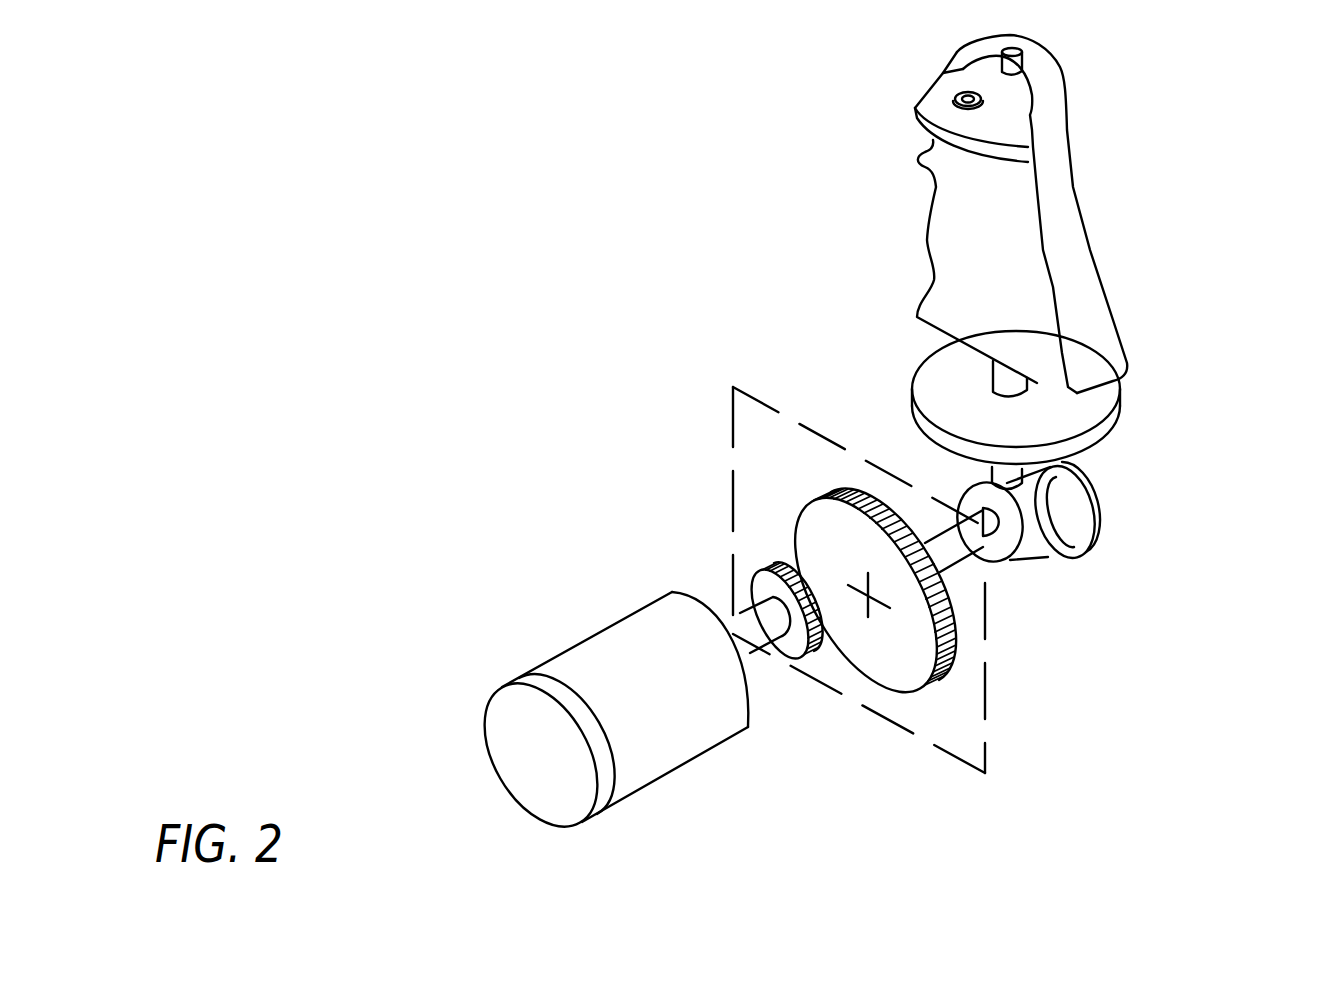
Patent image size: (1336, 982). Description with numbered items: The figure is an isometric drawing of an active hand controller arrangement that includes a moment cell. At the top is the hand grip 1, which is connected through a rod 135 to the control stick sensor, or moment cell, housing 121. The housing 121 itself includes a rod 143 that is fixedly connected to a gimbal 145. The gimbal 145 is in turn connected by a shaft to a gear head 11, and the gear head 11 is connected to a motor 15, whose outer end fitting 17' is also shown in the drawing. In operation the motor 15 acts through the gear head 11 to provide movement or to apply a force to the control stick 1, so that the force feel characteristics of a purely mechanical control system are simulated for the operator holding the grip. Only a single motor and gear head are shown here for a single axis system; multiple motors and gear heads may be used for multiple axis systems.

The hand grip 1 is at (957, 228).
The rod 135 is at (1021, 390).
The control stick sensor housing 121 is at (1097, 435).
The rod 143 is at (1020, 476).
The gimbal 145 is at (1010, 547).
The gear head 11 is at (765, 530).
The motor 15 is at (657, 622).
The motor end fitting 17' is at (632, 776).